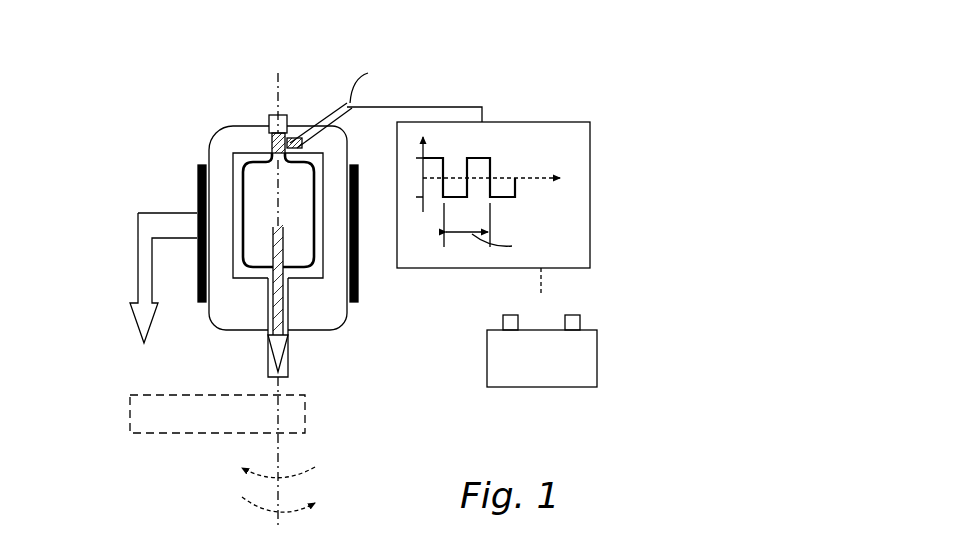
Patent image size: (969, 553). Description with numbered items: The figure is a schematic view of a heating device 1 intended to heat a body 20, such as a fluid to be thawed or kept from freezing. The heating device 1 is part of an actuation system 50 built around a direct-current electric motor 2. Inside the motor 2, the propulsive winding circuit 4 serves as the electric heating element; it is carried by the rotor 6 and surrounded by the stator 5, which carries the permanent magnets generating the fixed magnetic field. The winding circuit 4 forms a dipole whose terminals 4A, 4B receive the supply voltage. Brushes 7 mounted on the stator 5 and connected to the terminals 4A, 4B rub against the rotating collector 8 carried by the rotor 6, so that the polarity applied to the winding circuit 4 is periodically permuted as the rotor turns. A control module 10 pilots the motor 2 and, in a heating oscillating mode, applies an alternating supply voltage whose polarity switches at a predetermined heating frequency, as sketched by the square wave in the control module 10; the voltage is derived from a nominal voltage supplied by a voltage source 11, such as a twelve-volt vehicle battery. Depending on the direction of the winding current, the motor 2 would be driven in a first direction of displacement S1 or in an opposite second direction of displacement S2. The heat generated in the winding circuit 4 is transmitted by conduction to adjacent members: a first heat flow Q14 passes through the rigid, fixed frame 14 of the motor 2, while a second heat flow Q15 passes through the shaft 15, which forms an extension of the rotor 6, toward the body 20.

The heating device 1 is at (583, 100).
The direct-current electric motor 2 is at (205, 125).
The propulsive winding circuit 4 is at (262, 158).
The terminal of the propulsive winding circuit 4A is at (252, 155).
The terminal of the propulsive winding circuit 4B is at (303, 146).
The stator 5 is at (206, 153).
The rotor 6 is at (324, 254).
The brushes 7 is at (296, 145).
The rotating collector 8 is at (285, 147).
The control module 10 is at (592, 148).
The voltage source 11 is at (590, 356).
The frame 14 is at (253, 195).
The shaft 15 is at (269, 375).
The body to heat 20 is at (130, 402).
The actuation system 50 is at (560, 52).
The first heat flow Q14 is at (135, 323).
The second heat flow Q15 is at (291, 340).
The first direction of displacement S1 is at (316, 470).
The second direction of displacement S2 is at (246, 511).